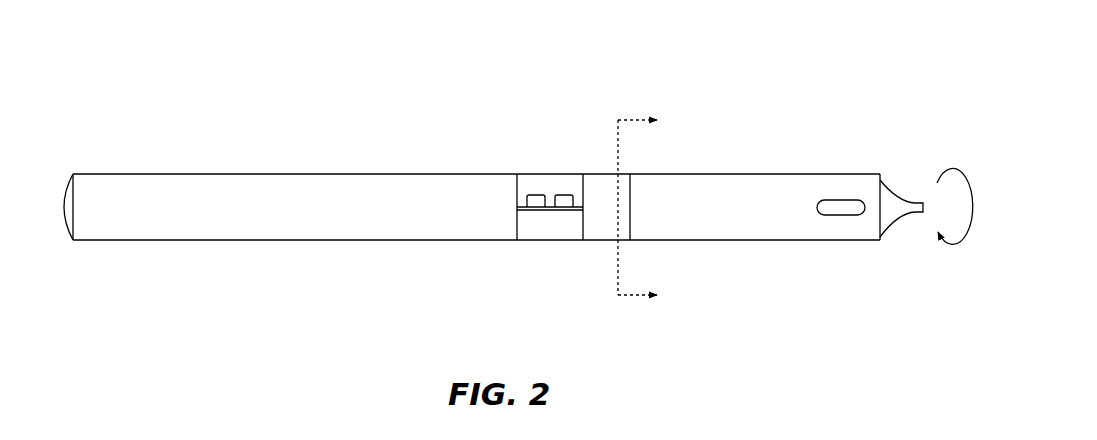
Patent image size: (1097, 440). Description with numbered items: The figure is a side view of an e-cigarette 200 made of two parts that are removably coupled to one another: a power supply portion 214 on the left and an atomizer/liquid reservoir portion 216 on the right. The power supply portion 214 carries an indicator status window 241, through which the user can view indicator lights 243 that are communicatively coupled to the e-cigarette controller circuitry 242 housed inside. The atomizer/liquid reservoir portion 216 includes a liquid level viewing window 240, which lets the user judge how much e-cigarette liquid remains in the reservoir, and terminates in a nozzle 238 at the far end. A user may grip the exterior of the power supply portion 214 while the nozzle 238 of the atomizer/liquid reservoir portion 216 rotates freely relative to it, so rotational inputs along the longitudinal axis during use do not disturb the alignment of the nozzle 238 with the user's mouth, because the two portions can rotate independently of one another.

The e-cigarette 200 is at (518, 163).
The power supply portion 214 is at (243, 171).
The atomizer/liquid reservoir portion 216 is at (786, 171).
The nozzle 238 is at (906, 186).
The liquid level viewing window 240 is at (838, 217).
The indicator status window 241 is at (529, 170).
The e-cigarette controller circuitry 242 is at (548, 213).
The indicator lights 243 is at (563, 194).